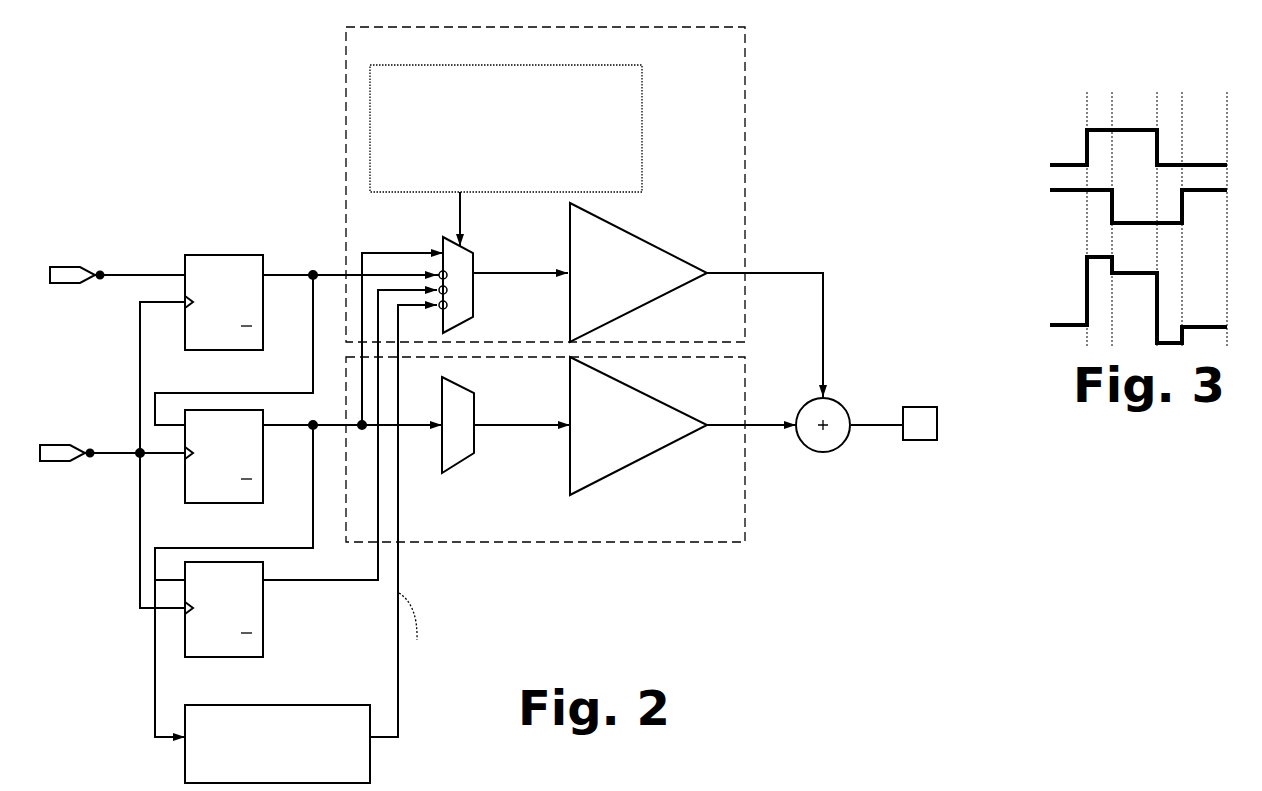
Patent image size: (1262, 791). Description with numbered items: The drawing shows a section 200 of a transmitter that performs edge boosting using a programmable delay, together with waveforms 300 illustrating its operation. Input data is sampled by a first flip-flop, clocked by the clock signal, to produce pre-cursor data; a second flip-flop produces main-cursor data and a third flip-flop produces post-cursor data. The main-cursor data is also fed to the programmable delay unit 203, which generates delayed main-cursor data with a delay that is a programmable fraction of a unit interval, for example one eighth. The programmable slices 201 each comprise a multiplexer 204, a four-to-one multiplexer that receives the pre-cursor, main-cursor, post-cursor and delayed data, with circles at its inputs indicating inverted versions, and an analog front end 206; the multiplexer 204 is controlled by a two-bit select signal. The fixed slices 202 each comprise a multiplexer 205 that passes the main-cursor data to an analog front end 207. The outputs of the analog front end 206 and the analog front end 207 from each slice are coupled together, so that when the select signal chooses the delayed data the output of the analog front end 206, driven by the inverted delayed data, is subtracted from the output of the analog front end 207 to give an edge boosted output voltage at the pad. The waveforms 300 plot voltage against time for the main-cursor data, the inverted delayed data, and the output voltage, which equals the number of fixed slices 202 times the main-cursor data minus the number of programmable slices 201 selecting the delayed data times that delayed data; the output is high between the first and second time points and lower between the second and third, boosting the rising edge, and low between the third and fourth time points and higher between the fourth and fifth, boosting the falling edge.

In FIG. 2, the section of a transmitter 200 is at (492, 386).
In FIG. 2, the programmable slices 201 is at (745, 105).
In FIG. 2, the fixed slices 202 is at (745, 493).
In FIG. 2, the programmable delay unit 203 is at (277, 744).
In FIG. 2, the multiplexer 204 is at (470, 252).
In FIG. 2, the multiplexer 205 is at (474, 393).
In FIG. 2, the analog-front-end 206 is at (638, 272).
In FIG. 2, the analog-front-end 207 is at (638, 426).
In FIG. 3, the waveforms 300 is at (1063, 211).